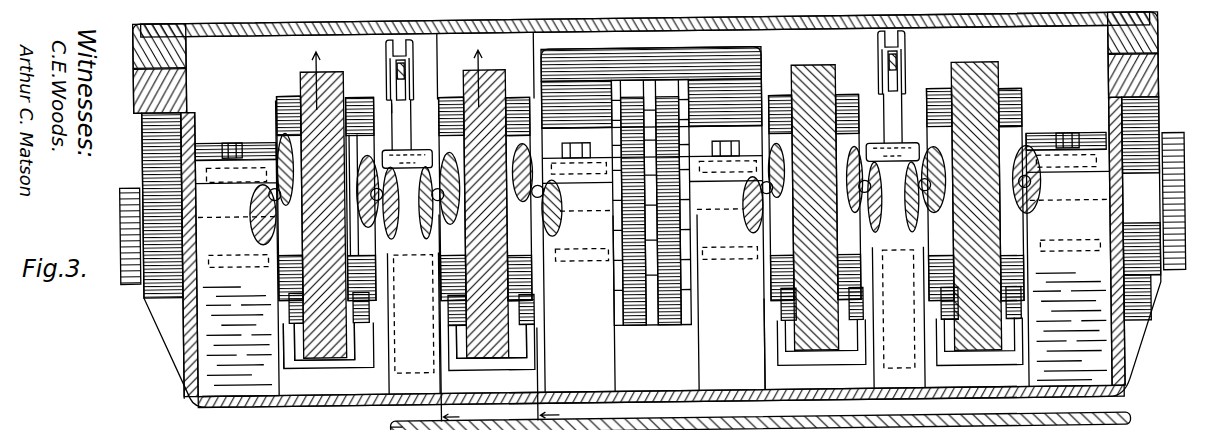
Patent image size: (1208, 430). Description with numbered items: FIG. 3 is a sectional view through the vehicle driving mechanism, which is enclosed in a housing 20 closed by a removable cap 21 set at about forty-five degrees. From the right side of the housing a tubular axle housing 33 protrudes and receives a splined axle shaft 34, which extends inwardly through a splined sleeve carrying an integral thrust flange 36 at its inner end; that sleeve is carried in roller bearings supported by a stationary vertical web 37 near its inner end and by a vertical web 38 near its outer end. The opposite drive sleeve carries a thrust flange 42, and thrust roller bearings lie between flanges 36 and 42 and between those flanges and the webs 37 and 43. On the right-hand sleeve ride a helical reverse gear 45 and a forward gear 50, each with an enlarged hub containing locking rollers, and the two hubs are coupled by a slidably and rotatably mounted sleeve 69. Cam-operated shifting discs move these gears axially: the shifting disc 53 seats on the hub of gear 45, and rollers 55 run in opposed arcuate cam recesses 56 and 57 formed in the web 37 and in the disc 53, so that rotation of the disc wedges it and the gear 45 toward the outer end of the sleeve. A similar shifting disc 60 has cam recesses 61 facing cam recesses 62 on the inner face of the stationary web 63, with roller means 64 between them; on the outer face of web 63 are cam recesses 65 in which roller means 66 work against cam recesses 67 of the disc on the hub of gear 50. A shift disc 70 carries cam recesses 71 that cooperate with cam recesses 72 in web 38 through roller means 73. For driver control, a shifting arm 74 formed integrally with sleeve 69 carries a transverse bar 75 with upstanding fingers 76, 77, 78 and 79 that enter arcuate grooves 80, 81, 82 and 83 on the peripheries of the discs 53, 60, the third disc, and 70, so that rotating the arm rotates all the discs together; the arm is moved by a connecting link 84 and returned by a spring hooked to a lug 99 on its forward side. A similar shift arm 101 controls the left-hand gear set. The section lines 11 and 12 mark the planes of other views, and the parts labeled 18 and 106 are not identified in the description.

The section line 11 is at (538, 228).
The section line 12 is at (463, 31).
The gear 18 is at (352, 108).
The housing 20 is at (176, 362).
The removable cap 21 is at (152, 44).
The tubular axle housing 33 is at (137, 144).
The axle shaft 34 is at (120, 187).
The thrust flange 36 is at (630, 95).
The stationary member or vertical web 37 is at (608, 367).
The stationary member or vertical web 38 is at (267, 367).
The thrust flange 42 is at (670, 95).
The stationary member or vertical web 43 is at (702, 378).
The helical gear 45 is at (487, 68).
The gear 50 is at (302, 72).
The shifting disc 53 is at (513, 95).
The rollers 55 is at (538, 220).
The cam recess 56 is at (560, 222).
The cam recess 57 is at (517, 155).
The shifting disc 60 is at (446, 95).
The cam recesses 61 is at (447, 158).
The cam recesses 62 is at (420, 224).
The stationary member or web 63 is at (413, 324).
The roller means 64 is at (393, 207).
The cam recesses 65 is at (388, 224).
The roller means 66 is at (365, 204).
The cam recesses 67 is at (367, 154).
The sleeve 69 is at (417, 154).
The shift disc 70 is at (277, 105).
The cam recesses 71 is at (279, 142).
The cam recesses 72 is at (273, 225).
The roller means 73 is at (270, 195).
The shifting arm 74 is at (387, 38).
The transverse bar 75 is at (333, 360).
The finger 76 is at (527, 350).
The finger 77 is at (457, 345).
The finger 78 is at (362, 344).
The finger 79 is at (293, 337).
The arcuate groove 80 is at (527, 310).
The arcuate groove 81 is at (454, 309).
The arcuate groove 82 is at (360, 301).
The arcuate groove 83 is at (288, 299).
The connecting link 84 is at (403, 61).
The lug 99 is at (394, 427).
The shift arm 101 is at (910, 68).
The rod 106 is at (396, 97).